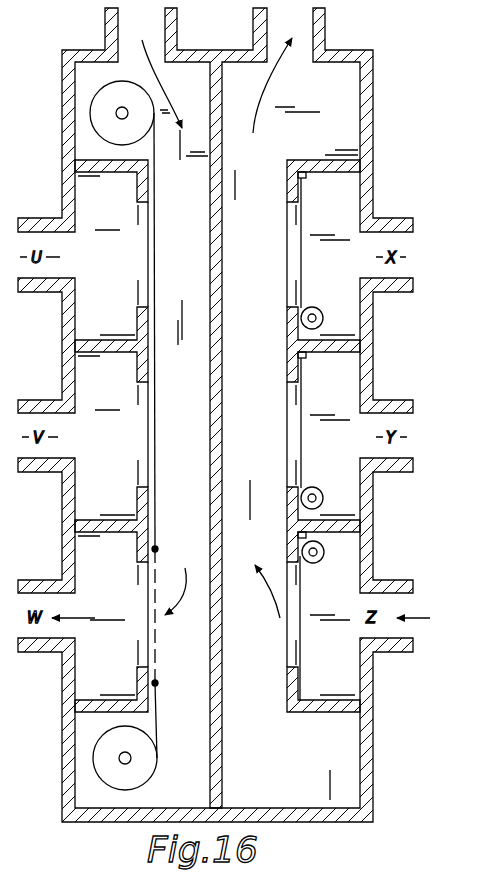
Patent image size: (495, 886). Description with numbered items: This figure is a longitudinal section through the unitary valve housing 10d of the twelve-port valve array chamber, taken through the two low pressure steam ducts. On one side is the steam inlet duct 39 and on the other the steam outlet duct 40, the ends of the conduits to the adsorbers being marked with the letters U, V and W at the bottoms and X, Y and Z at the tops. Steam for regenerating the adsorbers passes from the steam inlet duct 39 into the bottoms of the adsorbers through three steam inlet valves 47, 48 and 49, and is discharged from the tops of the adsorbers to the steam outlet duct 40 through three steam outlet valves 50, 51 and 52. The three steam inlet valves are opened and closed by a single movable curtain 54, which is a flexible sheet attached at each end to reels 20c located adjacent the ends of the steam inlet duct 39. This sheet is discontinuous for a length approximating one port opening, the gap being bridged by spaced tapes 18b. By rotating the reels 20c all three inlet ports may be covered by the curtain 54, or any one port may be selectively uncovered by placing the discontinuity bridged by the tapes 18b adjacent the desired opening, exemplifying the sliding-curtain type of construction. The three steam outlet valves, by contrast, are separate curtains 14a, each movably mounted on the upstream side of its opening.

The valve housing 10d is at (372, 90).
The steam inlet duct 39 is at (197, 91).
The steam outlet duct 40 is at (341, 93).
The reels 20c is at (124, 86).
The movable curtain 54 is at (157, 510).
The spaced tapes 18b is at (158, 650).
The steam inlet valve 47 is at (140, 254).
The steam inlet valve 48 is at (140, 434).
The steam inlet valve 49 is at (140, 588).
The steam outlet valve 50 is at (287, 252).
The steam outlet valve 51 is at (287, 433).
The steam outlet valve 52 is at (287, 637).
The curtain 14a is at (304, 272).